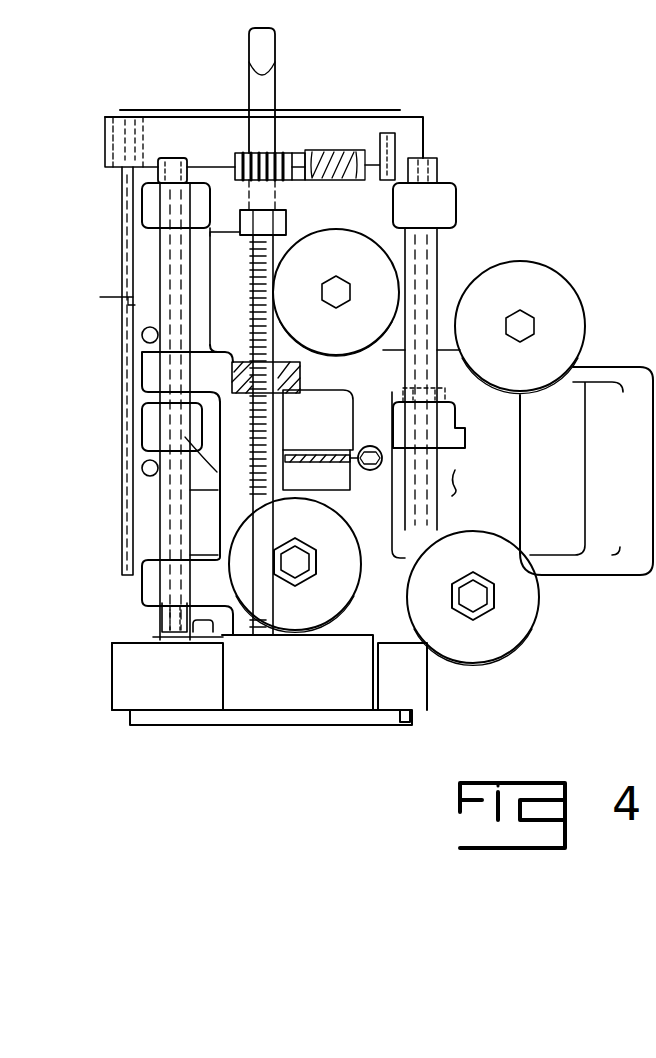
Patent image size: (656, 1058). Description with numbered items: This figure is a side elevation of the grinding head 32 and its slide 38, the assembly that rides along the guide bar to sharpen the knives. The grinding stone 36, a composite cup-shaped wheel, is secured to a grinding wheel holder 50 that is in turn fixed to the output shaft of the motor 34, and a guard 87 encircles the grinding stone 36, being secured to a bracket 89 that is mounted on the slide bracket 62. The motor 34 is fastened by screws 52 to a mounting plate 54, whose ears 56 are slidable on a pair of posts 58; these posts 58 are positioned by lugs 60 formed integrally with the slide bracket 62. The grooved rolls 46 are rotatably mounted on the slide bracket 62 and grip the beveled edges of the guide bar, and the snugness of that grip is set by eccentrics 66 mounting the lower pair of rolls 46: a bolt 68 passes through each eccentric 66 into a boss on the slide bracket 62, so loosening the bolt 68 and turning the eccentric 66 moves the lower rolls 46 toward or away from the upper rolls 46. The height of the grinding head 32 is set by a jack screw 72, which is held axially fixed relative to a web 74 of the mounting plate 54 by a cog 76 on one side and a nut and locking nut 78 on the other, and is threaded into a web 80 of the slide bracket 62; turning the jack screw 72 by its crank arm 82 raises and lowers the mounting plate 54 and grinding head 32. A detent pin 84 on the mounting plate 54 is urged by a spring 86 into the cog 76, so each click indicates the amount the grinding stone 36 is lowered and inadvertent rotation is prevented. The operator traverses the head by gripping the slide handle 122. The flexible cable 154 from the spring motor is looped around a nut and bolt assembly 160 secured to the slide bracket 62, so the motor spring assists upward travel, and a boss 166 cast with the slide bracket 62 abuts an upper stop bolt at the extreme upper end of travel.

The grinding head 32 is at (430, 724).
The motor 34 is at (125, 262).
The grinding stone 36 is at (185, 726).
The slide 38 is at (489, 150).
The grooved rolls 46 is at (330, 230).
The grinding wheel holder 50 is at (160, 630).
The screws 52 is at (142, 337).
The mounting plate 54 is at (100, 300).
The ears 56 is at (142, 200).
The posts 58 is at (157, 513).
The lugs 60 is at (142, 373).
The slide bracket 62 is at (186, 441).
The eccentrics 66 is at (276, 572).
The bolt 68 is at (306, 570).
The jack screw 72 is at (252, 320).
The web 74 is at (213, 173).
The cog 76 is at (250, 160).
The nut and locking nut 78 is at (242, 236).
The web 80 is at (242, 362).
The crank arm 82 is at (276, 58).
The detent pin 84 is at (320, 150).
The spring 86 is at (375, 152).
The guard 87 is at (112, 697).
The bracket 89 is at (222, 658).
The slide handle 122 is at (585, 497).
The flexible cable 154 is at (345, 463).
The nut and bolt assembly 160 is at (363, 446).
The boss 166 is at (456, 492).